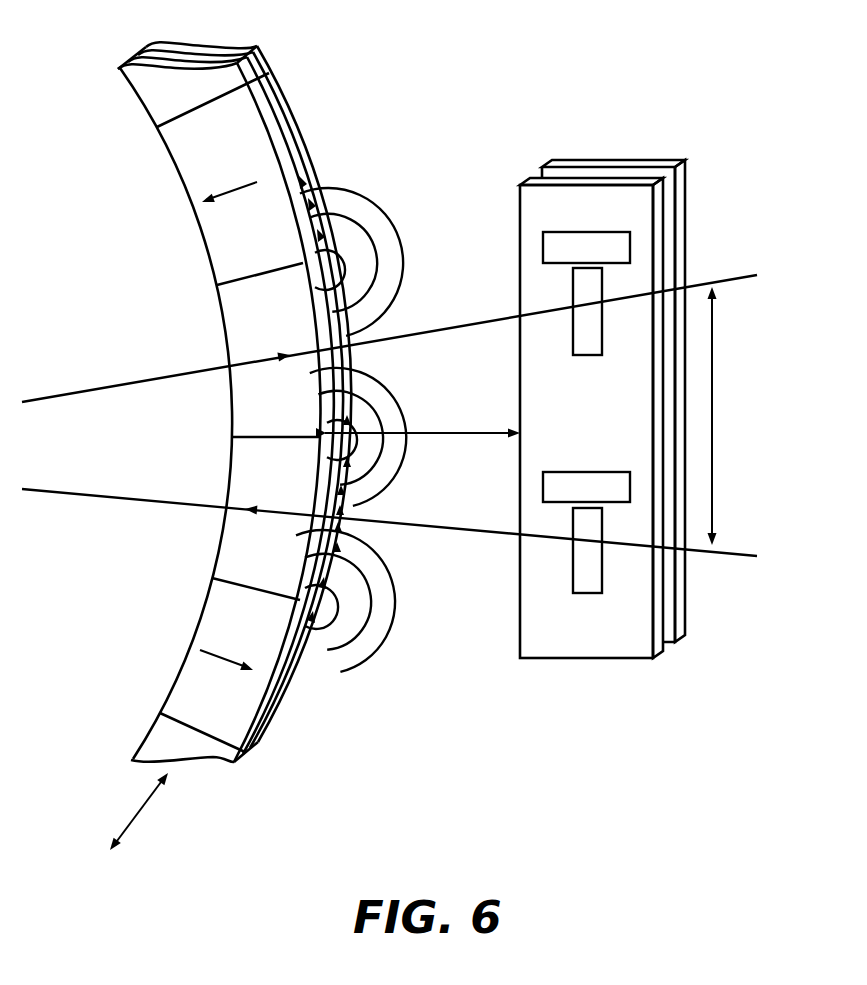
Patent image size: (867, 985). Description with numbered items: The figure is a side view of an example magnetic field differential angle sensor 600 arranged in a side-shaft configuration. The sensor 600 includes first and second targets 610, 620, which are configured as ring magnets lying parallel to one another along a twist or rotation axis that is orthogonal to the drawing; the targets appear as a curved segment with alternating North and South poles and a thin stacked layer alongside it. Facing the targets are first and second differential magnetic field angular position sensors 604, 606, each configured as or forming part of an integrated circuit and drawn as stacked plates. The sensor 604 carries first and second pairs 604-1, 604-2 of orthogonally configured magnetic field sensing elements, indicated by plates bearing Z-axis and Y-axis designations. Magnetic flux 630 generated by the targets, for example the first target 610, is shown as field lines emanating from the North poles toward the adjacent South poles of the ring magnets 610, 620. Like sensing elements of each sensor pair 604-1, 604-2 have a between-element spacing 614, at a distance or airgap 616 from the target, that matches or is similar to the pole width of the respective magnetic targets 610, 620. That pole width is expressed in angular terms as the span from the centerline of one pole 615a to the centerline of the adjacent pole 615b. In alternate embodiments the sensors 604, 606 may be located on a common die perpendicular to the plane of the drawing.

The magnetic field differential angle sensor 600 is at (650, 44).
The first differential magnetic field angular position sensor 604 is at (520, 185).
The first pair of orthogonally configured magnetic field sensing elements 604-1 is at (587, 357).
The second pair of orthogonally configured magnetic field sensing elements 604-2 is at (587, 595).
The second differential magnetic field angular position sensor 606 is at (633, 162).
The first target 610 is at (128, 63).
The between-element spacing 614 is at (712, 400).
The centerline of one pole 615a is at (453, 323).
The centerline of an adjacent pole 615b is at (467, 528).
The airgap 616 is at (478, 431).
The second target 620 is at (260, 53).
The magnetic flux 630 is at (370, 212).